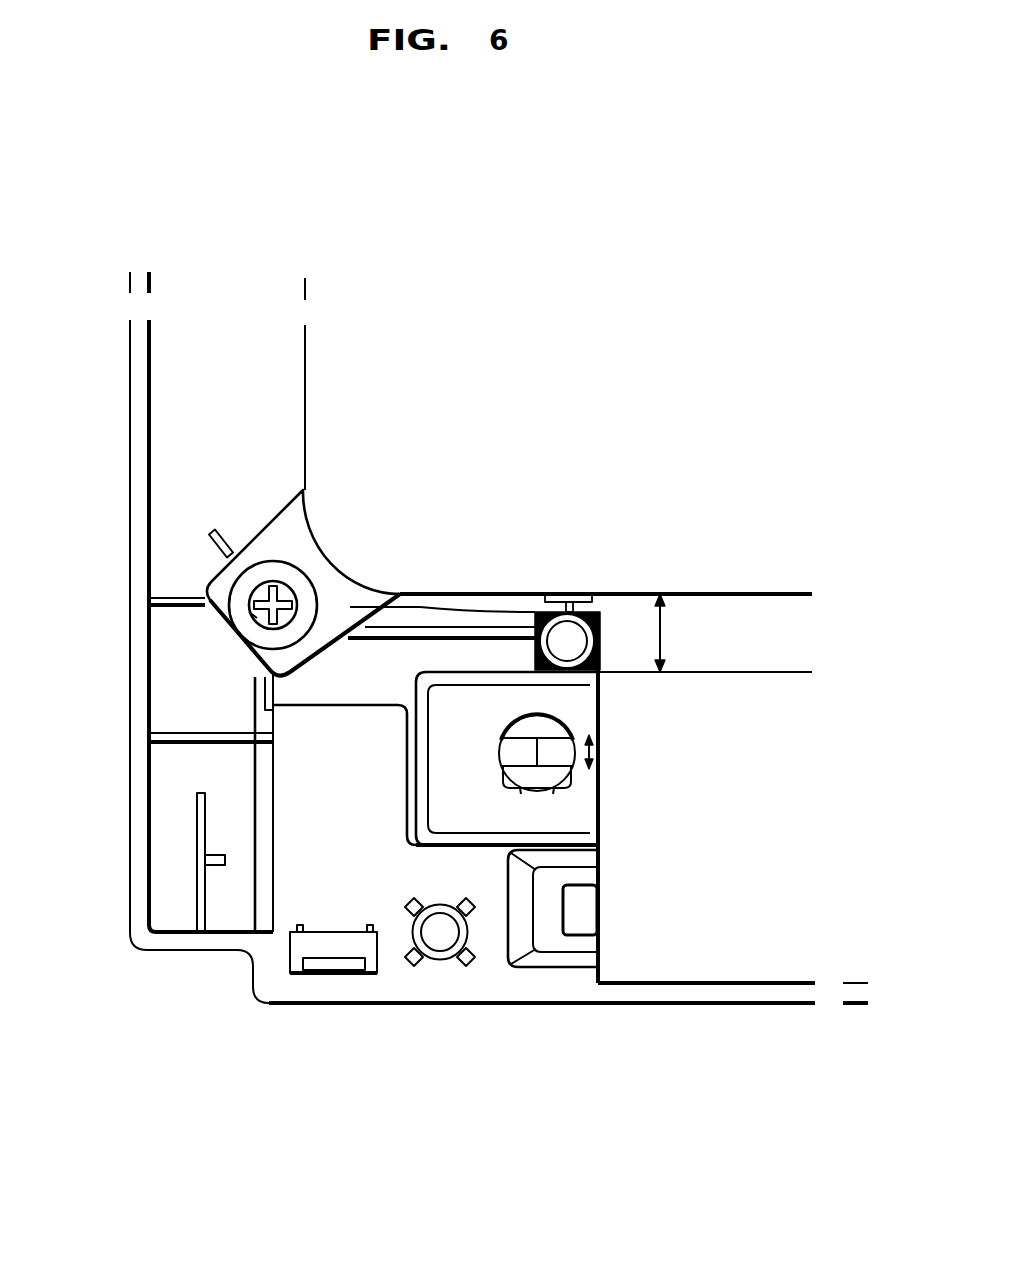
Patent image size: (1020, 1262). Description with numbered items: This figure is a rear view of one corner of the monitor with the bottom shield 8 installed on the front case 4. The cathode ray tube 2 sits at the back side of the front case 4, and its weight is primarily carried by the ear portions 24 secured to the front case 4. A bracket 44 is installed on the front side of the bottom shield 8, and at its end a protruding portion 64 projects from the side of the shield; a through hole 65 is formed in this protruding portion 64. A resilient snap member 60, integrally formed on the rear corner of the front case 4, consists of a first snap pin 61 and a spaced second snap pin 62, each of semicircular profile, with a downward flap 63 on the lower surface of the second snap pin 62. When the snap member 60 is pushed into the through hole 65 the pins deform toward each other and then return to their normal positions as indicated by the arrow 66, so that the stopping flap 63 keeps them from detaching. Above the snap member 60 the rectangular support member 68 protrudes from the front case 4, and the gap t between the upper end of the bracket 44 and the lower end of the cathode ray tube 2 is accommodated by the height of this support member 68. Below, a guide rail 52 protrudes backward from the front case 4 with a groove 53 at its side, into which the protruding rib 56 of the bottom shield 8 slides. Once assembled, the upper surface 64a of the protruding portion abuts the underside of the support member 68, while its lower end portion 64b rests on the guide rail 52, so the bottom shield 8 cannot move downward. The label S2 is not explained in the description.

The cathode ray tube 2 is at (325, 360).
The front case 4 is at (118, 468).
The ear portions 24 is at (217, 588).
The gap S2 is at (250, 615).
The protruding portions 64 is at (408, 690).
The upper surface 64a is at (472, 670).
The lower end portion 64b is at (437, 847).
The through hole 65 is at (500, 748).
The arrow 66 is at (598, 748).
The flap 63 is at (565, 785).
The support member 68 is at (600, 633).
The bracket 44 is at (705, 671).
The gap t is at (670, 633).
The snap member 60 is at (497, 1062).
The first snap pin 61 is at (517, 735).
The second snap pin 62 is at (523, 780).
The guide rail 52 is at (527, 948).
The groove 53 is at (577, 936).
The protruding rib 56 is at (588, 907).
The bottom shield 8 is at (708, 975).